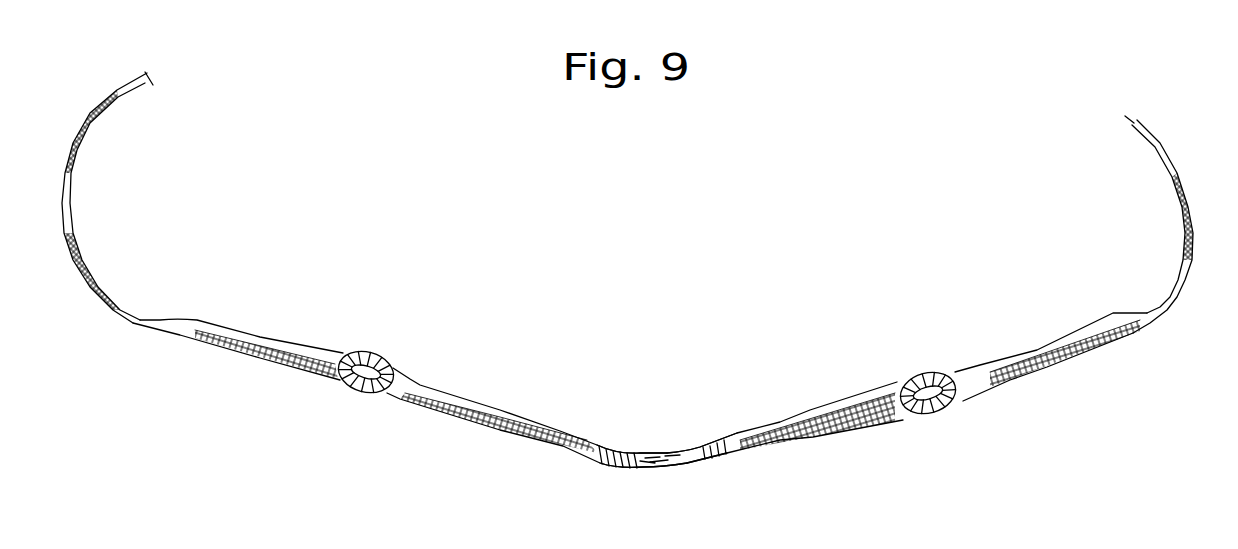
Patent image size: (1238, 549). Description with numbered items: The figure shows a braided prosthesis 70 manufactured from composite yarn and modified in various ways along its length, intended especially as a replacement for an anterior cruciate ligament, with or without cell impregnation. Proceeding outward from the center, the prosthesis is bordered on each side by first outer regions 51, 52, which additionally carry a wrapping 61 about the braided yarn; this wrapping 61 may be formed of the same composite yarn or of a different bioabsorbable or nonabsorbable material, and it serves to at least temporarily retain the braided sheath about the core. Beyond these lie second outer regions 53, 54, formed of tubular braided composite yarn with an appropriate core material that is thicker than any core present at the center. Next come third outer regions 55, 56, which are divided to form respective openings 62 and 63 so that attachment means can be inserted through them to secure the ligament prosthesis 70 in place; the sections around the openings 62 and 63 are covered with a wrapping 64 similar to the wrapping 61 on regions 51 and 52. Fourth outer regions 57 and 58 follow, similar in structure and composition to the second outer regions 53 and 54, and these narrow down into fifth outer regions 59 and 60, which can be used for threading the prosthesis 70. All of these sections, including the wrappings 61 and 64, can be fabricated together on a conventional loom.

The first outer region 51 is at (617, 467).
The first outer region 52 is at (713, 457).
The second outer region 53 is at (487, 403).
The second outer region 54 is at (810, 413).
The third outer region 55 is at (370, 343).
The third outer region 56 is at (932, 360).
The fourth outer region 57 is at (247, 357).
The fourth outer region 58 is at (1090, 357).
The fifth outer region 59 is at (117, 307).
The fifth outer region 60 is at (1173, 300).
The wrapping 61 is at (613, 450).
The opening 62 is at (363, 380).
The opening 63 is at (940, 413).
The wrapping 64 is at (345, 355).
The braided prosthesis 70 is at (510, 266).